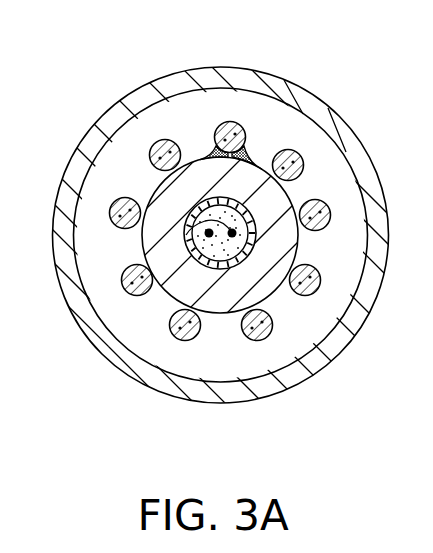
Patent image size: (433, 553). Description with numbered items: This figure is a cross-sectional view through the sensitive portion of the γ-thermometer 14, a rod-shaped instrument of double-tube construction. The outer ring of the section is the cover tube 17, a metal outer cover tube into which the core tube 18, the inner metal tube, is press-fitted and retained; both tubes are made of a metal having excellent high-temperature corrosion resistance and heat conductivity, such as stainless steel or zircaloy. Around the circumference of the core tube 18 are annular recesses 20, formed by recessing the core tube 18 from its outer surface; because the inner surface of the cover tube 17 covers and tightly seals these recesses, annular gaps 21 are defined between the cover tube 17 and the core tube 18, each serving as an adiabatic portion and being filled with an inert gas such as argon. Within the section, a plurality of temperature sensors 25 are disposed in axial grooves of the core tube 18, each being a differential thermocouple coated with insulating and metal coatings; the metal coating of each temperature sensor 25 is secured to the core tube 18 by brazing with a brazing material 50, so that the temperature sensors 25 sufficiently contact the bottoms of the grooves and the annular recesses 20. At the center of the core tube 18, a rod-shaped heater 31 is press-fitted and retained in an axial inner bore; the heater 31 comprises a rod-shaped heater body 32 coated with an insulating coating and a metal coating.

The γ-thermometer 14 is at (276, 65).
The cover tube 17 is at (272, 388).
The core tube 18 is at (222, 300).
The annular recesses 20 is at (323, 358).
The annular gaps 21 is at (121, 318).
The temperature sensors 25 is at (220, 123).
The heater 31 is at (254, 201).
The heater body 32 is at (209, 233).
The brazing material 50 is at (207, 150).